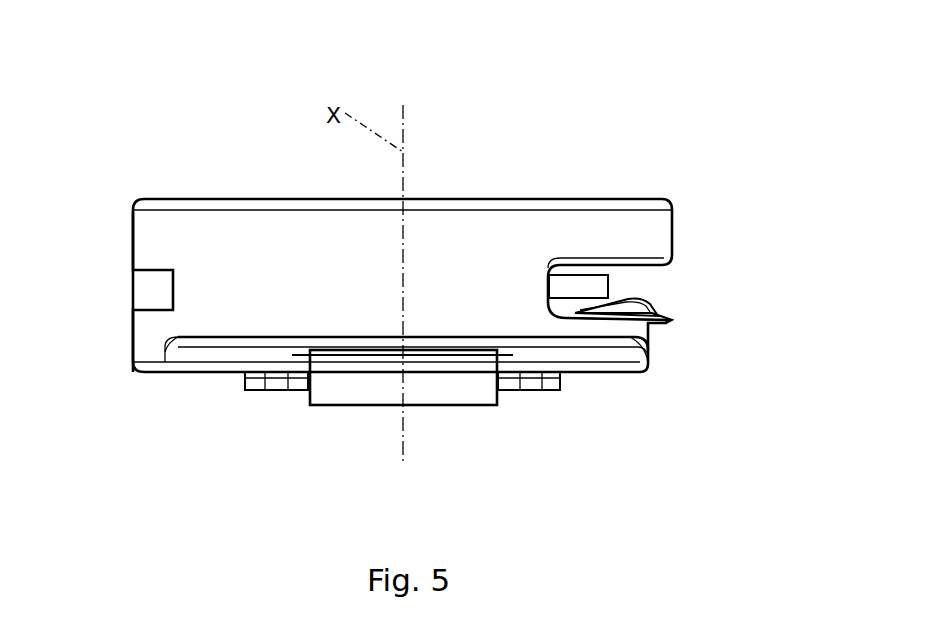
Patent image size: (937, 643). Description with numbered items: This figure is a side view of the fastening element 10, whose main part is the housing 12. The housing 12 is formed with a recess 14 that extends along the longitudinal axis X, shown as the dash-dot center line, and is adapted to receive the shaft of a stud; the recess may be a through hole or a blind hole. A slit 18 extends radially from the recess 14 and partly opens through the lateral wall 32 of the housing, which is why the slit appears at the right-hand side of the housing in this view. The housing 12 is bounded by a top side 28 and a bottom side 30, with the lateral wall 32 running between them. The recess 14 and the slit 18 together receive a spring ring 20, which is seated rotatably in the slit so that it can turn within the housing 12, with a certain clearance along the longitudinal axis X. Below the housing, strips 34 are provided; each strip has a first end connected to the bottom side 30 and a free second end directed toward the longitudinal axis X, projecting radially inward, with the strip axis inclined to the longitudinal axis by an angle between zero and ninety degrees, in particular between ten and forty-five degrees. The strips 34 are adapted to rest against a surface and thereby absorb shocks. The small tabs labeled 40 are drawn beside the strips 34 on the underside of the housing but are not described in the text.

The fastening element 10 is at (745, 152).
The housing 12 is at (674, 232).
The recess 14 is at (448, 378).
The slit 18 is at (628, 288).
The spring ring 20 is at (580, 285).
The top side 28 is at (184, 198).
The bottom side 30 is at (172, 340).
The lateral wall 32 is at (145, 243).
The strips 34 is at (360, 388).
The mounting tabs 40 is at (268, 393).